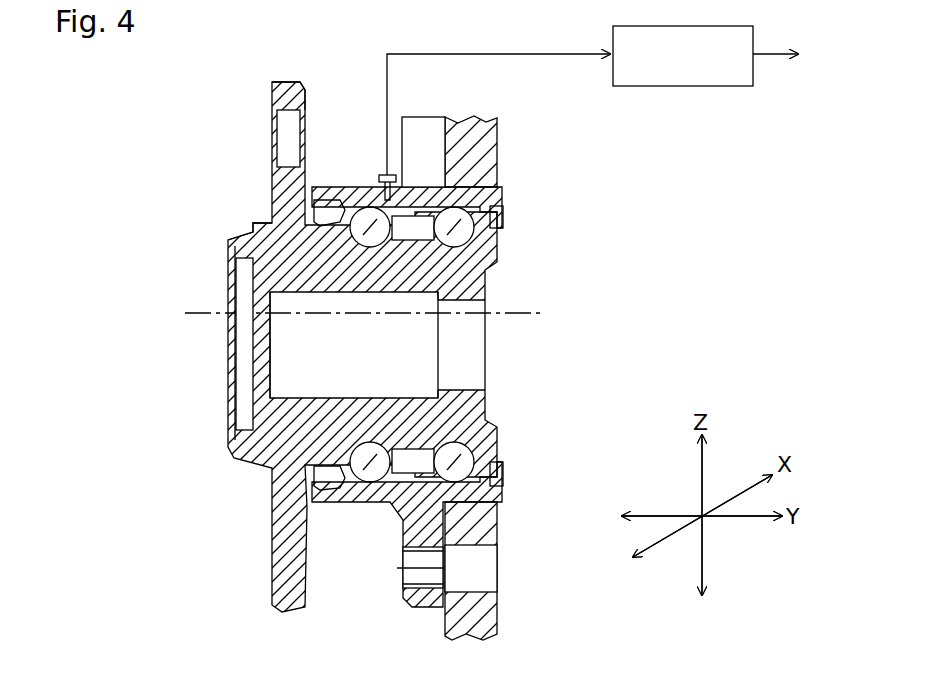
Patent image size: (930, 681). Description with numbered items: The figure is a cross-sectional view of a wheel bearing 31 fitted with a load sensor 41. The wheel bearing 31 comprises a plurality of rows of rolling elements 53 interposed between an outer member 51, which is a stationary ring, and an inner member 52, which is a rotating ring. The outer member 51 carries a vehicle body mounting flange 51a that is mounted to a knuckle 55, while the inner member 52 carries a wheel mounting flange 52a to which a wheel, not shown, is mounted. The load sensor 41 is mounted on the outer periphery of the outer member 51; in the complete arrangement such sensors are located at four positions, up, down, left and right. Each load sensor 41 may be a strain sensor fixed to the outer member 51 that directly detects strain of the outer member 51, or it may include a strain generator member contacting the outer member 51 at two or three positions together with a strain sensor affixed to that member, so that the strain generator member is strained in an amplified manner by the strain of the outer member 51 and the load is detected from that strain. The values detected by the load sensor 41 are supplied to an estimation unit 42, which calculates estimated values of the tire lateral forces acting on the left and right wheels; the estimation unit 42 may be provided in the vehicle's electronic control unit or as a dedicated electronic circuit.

The wheel bearing 31 is at (254, 218).
The load sensor 41 is at (385, 175).
The estimation unit 42 is at (683, 86).
The outer member 51 is at (410, 498).
The vehicle body mounting flange 51a is at (425, 602).
The inner member 52 is at (288, 512).
The wheel mounting flange 52a is at (287, 92).
The rolling elements 53 is at (438, 435).
The knuckle 55 is at (483, 605).